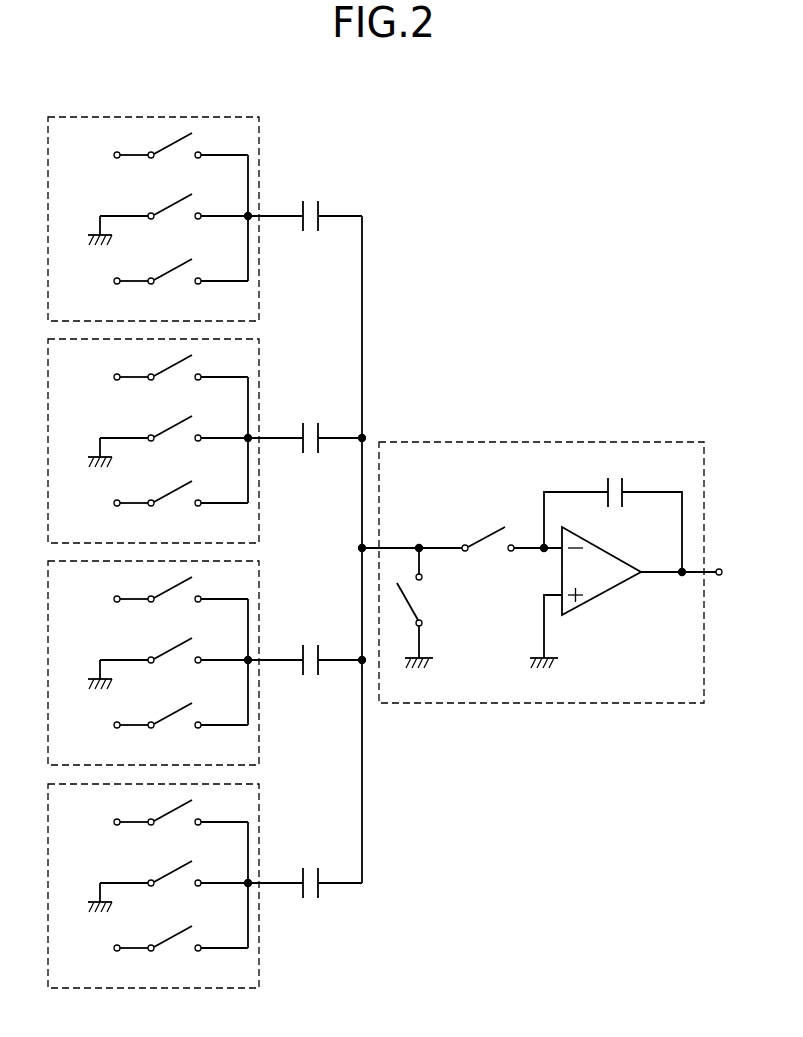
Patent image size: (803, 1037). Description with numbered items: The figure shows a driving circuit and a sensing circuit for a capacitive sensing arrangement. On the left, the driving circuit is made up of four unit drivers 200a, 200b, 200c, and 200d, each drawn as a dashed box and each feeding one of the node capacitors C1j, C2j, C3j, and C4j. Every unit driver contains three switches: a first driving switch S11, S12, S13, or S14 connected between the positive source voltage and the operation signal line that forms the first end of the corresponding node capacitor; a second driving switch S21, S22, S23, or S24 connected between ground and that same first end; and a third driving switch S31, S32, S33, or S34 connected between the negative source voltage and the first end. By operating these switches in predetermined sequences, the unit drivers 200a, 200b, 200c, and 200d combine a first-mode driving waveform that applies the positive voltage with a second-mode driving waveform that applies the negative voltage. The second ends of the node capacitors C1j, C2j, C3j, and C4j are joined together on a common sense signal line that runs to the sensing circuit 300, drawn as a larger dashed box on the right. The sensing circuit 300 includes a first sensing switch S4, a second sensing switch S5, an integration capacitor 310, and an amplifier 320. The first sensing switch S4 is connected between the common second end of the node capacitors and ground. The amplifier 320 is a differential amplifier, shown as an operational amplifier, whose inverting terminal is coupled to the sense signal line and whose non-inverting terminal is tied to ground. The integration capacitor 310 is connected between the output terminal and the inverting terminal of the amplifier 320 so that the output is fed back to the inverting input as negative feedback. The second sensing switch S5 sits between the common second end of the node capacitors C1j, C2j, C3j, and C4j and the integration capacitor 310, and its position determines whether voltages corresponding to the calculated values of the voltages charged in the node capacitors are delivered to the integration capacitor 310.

The unit driver 200a is at (275, 134).
The unit driver 200b is at (275, 356).
The unit driver 200c is at (275, 578).
The unit driver 200d is at (275, 801).
The sensing circuit 300 is at (550, 599).
The integration capacitor 310 is at (613, 510).
The amplifier 320 is at (605, 605).
The first driving switch S11 is at (157, 160).
The second driving switch S21 is at (168, 221).
The third driving switch S31 is at (153, 286).
The first driving switch S12 is at (157, 382).
The second driving switch S22 is at (168, 443).
The third driving switch S32 is at (153, 508).
The first driving switch S13 is at (157, 604).
The second driving switch S23 is at (168, 665).
The third driving switch S33 is at (153, 730).
The first driving switch S14 is at (157, 827).
The second driving switch S24 is at (168, 888).
The third driving switch S34 is at (153, 953).
The first sensing switch S4 is at (423, 608).
The second sensing switch S5 is at (512, 554).
The node capacitor C1j is at (305, 221).
The node capacitor C2j is at (305, 443).
The node capacitor C3j is at (305, 665).
The node capacitor C4j is at (305, 888).